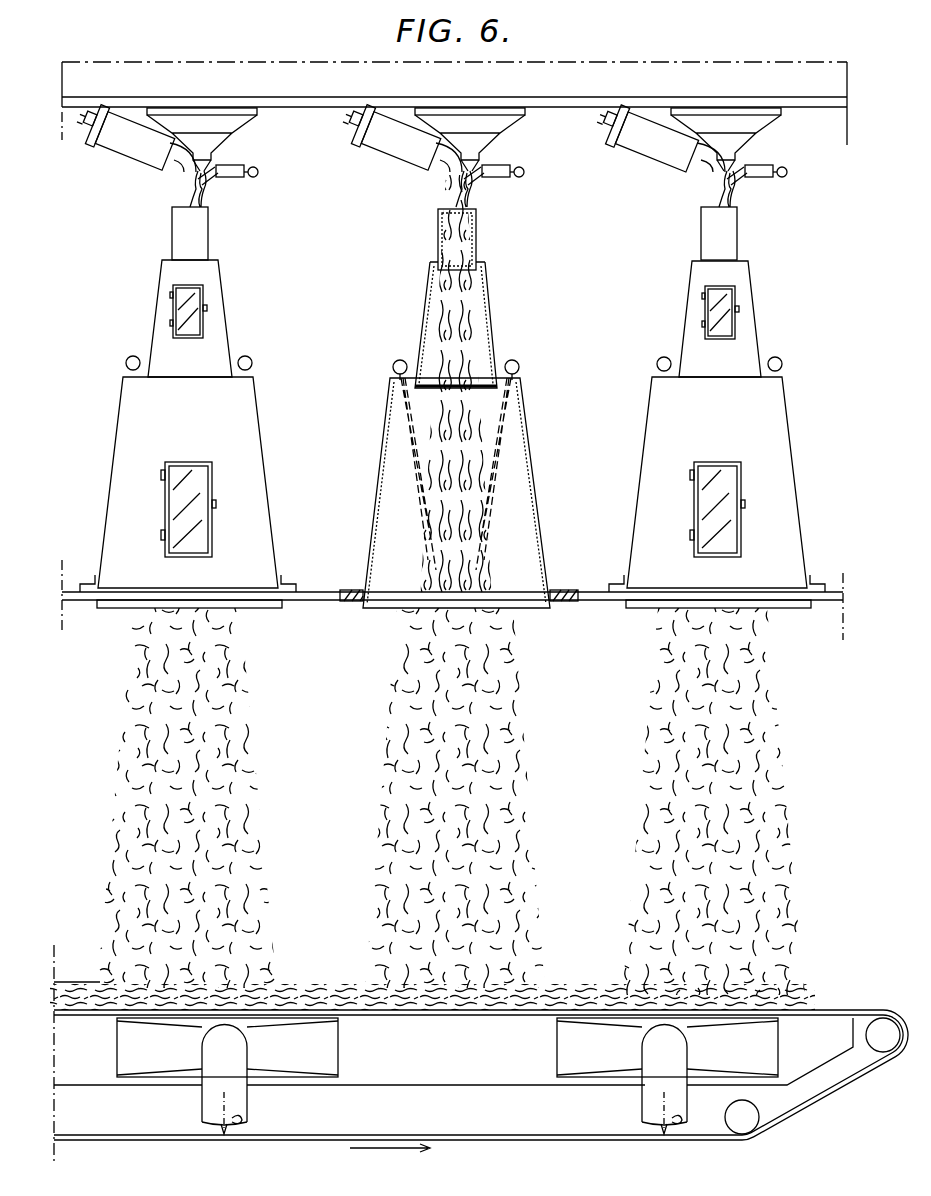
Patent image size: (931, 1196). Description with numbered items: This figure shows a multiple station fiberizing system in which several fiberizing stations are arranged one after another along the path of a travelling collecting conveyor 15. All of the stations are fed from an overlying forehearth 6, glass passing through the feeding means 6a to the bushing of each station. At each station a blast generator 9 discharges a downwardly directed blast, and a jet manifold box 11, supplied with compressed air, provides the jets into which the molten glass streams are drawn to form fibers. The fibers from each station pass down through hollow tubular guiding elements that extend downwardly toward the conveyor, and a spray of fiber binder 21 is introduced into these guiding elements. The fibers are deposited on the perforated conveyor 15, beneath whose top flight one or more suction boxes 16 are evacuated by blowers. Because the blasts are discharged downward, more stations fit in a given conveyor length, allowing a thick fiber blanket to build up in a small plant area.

The forehearth 6 is at (344, 78).
The feeding means 6a is at (217, 145).
The blast generator 9 is at (133, 153).
The jet manifold box 11 is at (233, 182).
The spray of fiber binder 21 is at (396, 362).
The suction box 16 is at (470, 1057).
The collecting conveyor 15 is at (817, 1098).